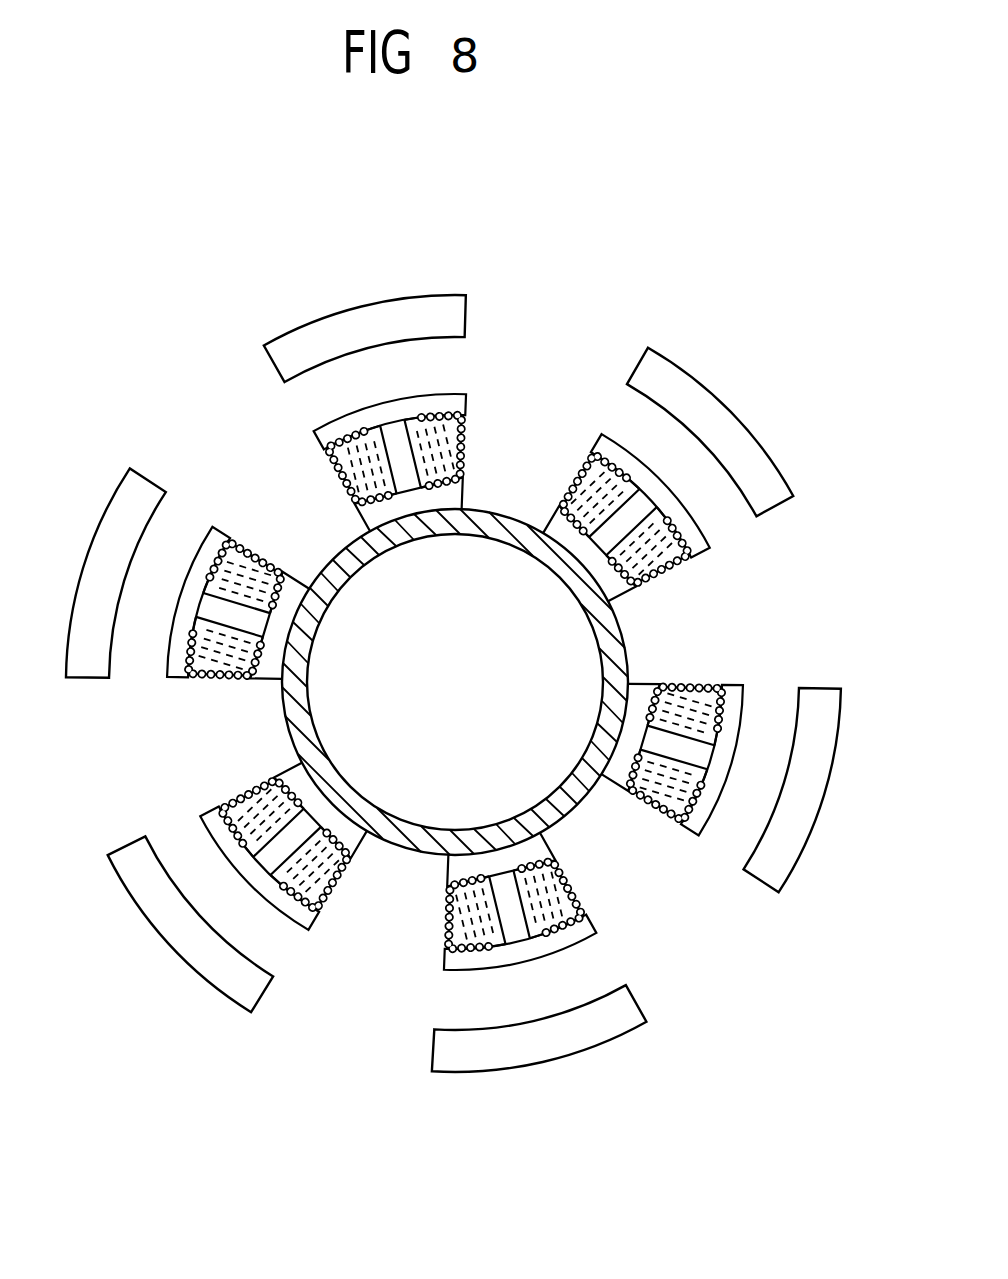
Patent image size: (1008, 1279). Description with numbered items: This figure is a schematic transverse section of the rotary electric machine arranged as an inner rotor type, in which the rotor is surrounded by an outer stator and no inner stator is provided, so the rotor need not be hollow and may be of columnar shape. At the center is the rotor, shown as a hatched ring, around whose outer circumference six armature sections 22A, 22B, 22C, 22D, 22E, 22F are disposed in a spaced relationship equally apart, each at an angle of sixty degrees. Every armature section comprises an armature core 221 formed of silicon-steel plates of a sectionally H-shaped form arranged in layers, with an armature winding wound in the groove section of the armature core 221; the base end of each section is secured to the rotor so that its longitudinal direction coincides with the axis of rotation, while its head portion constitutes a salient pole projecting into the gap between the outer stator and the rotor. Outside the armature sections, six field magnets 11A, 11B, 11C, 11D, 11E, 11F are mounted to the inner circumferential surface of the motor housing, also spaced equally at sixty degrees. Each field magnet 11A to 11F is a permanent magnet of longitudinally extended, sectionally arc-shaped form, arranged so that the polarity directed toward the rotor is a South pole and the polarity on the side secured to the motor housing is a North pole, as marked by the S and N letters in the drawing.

The armature core 221 is at (298, 723).
The armature section 22A is at (292, 412).
The armature section 22B is at (619, 412).
The armature section 22C is at (749, 655).
The armature section 22D is at (624, 955).
The armature section 22E is at (334, 933).
The armature section 22F is at (197, 715).
The field magnet 11A is at (423, 308).
The field magnet 11B is at (688, 387).
The field magnet 11C is at (813, 702).
The field magnet 11D is at (609, 1027).
The field magnet 11E is at (247, 1000).
The field magnet 11F is at (93, 670).